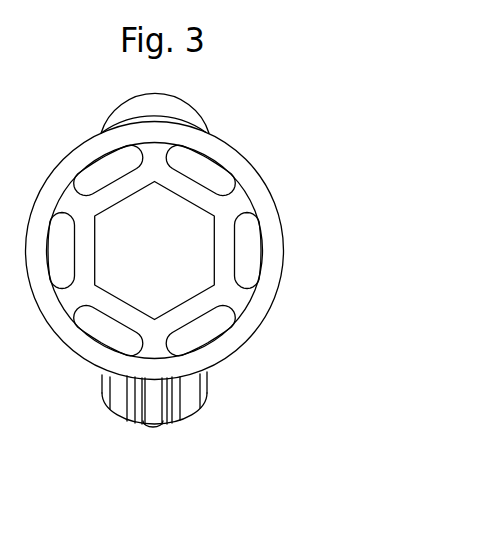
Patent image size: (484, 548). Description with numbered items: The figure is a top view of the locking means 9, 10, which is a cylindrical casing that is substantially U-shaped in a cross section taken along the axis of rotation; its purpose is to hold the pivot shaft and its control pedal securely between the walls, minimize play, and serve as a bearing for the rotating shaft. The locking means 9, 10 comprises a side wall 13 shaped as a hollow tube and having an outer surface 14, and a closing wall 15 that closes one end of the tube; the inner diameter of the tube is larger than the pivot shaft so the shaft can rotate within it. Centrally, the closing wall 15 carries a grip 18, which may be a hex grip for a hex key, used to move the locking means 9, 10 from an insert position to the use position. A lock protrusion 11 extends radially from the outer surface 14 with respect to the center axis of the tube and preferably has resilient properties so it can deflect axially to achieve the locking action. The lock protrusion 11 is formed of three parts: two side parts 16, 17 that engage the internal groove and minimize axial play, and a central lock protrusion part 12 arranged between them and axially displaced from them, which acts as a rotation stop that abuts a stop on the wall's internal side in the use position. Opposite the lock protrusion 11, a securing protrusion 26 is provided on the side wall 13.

The locking means 9 is at (213, 228).
The locking means 10 is at (258, 148).
The lock protrusion 11 is at (198, 405).
The central lock protrusion part 12 is at (157, 410).
The side wall 13 is at (245, 251).
The outer surface 14 is at (278, 285).
The closing wall 15 is at (227, 243).
The lock protrusion side part 16 is at (118, 400).
The lock protrusion side part 17 is at (185, 407).
The grip 18 is at (113, 208).
The securing protrusion 26 is at (192, 113).